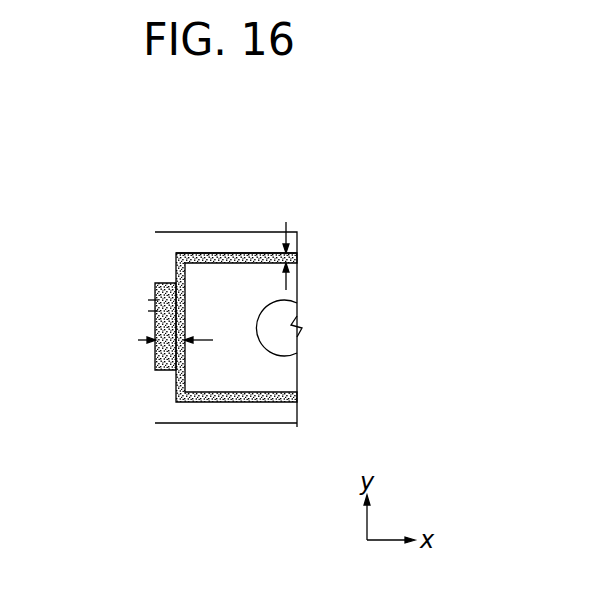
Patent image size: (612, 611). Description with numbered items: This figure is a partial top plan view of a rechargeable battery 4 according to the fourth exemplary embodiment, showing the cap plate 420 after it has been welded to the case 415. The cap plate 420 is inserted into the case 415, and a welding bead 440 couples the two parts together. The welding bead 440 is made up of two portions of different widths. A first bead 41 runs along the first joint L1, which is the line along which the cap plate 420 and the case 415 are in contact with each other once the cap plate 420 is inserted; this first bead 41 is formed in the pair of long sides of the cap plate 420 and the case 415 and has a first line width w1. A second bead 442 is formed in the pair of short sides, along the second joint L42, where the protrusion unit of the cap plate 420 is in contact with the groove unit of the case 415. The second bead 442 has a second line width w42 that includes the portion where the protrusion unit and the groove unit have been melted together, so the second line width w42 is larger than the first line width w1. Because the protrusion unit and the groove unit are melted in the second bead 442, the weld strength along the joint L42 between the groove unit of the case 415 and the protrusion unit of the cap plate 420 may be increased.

The rechargeable battery 4 is at (246, 148).
The case 415 is at (243, 423).
The welding bead 440 is at (212, 184).
The first bead 41 is at (219, 257).
The second bead 442 is at (165, 283).
The cap plate 420 is at (255, 283).
The first joint L1 is at (240, 252).
The first line width w1 is at (291, 243).
The second joint L42 is at (150, 311).
The second line width w42 is at (157, 355).